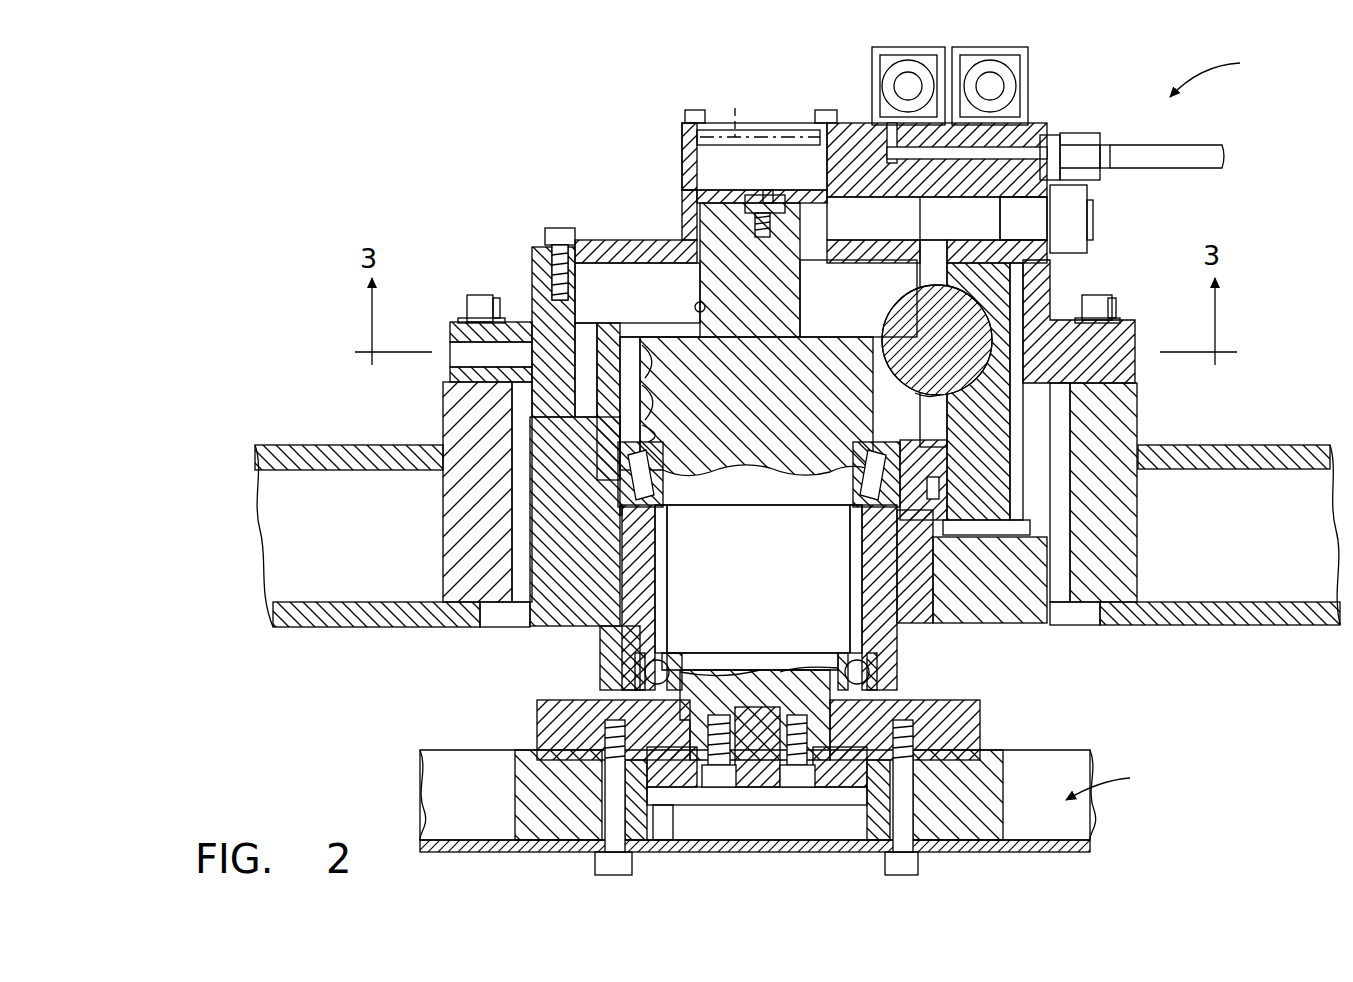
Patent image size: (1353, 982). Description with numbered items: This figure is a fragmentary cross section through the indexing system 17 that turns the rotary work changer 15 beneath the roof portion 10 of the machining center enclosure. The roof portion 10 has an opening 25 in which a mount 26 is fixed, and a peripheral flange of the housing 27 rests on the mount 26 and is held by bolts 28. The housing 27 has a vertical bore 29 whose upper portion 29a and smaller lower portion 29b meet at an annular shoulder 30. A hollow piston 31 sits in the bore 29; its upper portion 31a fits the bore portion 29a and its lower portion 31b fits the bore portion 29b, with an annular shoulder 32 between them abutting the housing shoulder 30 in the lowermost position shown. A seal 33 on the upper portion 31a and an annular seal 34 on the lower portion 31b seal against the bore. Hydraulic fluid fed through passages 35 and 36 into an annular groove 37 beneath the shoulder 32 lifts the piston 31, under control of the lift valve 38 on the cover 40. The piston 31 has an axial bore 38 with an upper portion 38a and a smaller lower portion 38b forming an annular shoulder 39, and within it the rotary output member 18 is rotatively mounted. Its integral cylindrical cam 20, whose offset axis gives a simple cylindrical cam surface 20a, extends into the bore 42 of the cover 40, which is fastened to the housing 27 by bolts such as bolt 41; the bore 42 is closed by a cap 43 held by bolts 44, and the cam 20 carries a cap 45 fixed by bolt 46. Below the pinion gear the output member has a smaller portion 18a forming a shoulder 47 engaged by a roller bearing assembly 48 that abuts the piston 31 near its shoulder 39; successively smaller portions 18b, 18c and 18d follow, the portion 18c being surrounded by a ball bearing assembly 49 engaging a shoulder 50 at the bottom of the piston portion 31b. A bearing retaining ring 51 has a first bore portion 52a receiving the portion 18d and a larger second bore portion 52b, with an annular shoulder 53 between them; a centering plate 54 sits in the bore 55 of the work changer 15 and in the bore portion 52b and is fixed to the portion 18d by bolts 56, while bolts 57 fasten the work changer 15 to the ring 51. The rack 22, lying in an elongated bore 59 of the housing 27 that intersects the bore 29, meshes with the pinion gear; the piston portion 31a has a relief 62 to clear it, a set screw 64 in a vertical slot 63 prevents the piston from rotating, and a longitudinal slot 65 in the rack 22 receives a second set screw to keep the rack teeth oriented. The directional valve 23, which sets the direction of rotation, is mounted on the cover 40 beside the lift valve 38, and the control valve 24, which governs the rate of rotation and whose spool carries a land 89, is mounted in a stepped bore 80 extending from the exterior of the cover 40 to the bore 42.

The roof portion 10 is at (1262, 445).
The rotary work changer 15 is at (802, 799).
The indexing system 17 is at (1224, 72).
The rotary output member 18 is at (782, 538).
The portion of smaller diameter 18a is at (788, 506).
The portion of slightly lesser diameter 18b is at (841, 646).
The portion of yet smaller diameter 18c is at (780, 650).
The final portion 18d is at (760, 650).
The cam 20 is at (765, 284).
The cylindrical cam surface 20a is at (708, 312).
The rack 22 is at (930, 260).
The directional valve 23 is at (893, 80).
The control valve 24 is at (1068, 212).
The opening 25 is at (1125, 432).
The mount 26 is at (1130, 527).
The housing 27 is at (1125, 333).
The bolts 28 is at (1112, 303).
The vertical bore 29 is at (580, 262).
The upper portion of bore 29a is at (590, 306).
The lower portion of bore 29b is at (652, 570).
The annular shoulder 30 is at (865, 546).
The piston 31 is at (645, 402).
The upper portion of piston 31a is at (650, 430).
The lower portion of piston 31b is at (625, 640).
The annular shoulder 32 is at (531, 504).
The seal 33 is at (940, 490).
The annular seal 34 is at (855, 608).
The passage 35 is at (1020, 298).
The passage 36 is at (1000, 536).
The annular groove 37 is at (950, 545).
The lift valve / axial bore 38 is at (990, 86).
The upper portion of axial bore 38a is at (645, 378).
The lower portion of axial bore 38b is at (657, 545).
The annular shoulder 39 is at (650, 518).
The cover 40 is at (652, 240).
The bolt 41 is at (555, 228).
The bore 42 is at (697, 170).
The cap 43 is at (800, 123).
The bolts 44 is at (688, 115).
The cap 45 is at (735, 108).
The bolt 46 is at (755, 192).
The shoulder 47 is at (670, 476).
The roller bearing assembly 48 is at (858, 485).
The ball bearing assembly 49 is at (870, 670).
The shoulder 50 is at (640, 673).
The bearing retaining ring 51 is at (972, 712).
The first central bore portion 52a is at (690, 660).
The second central bore portion 52b is at (650, 770).
The annular shoulder 53 is at (662, 795).
The centering plate 54 is at (668, 840).
The bore 55 is at (850, 797).
The bolts 56 is at (725, 787).
The bolts 57 is at (600, 863).
The elongated bore 59 is at (940, 400).
The relief 62 is at (925, 450).
The vertical slot 63 is at (596, 340).
The set screw 64 is at (530, 312).
The elongated slot 65 is at (985, 348).
The bore 80 is at (1023, 218).
The land 89 is at (820, 220).